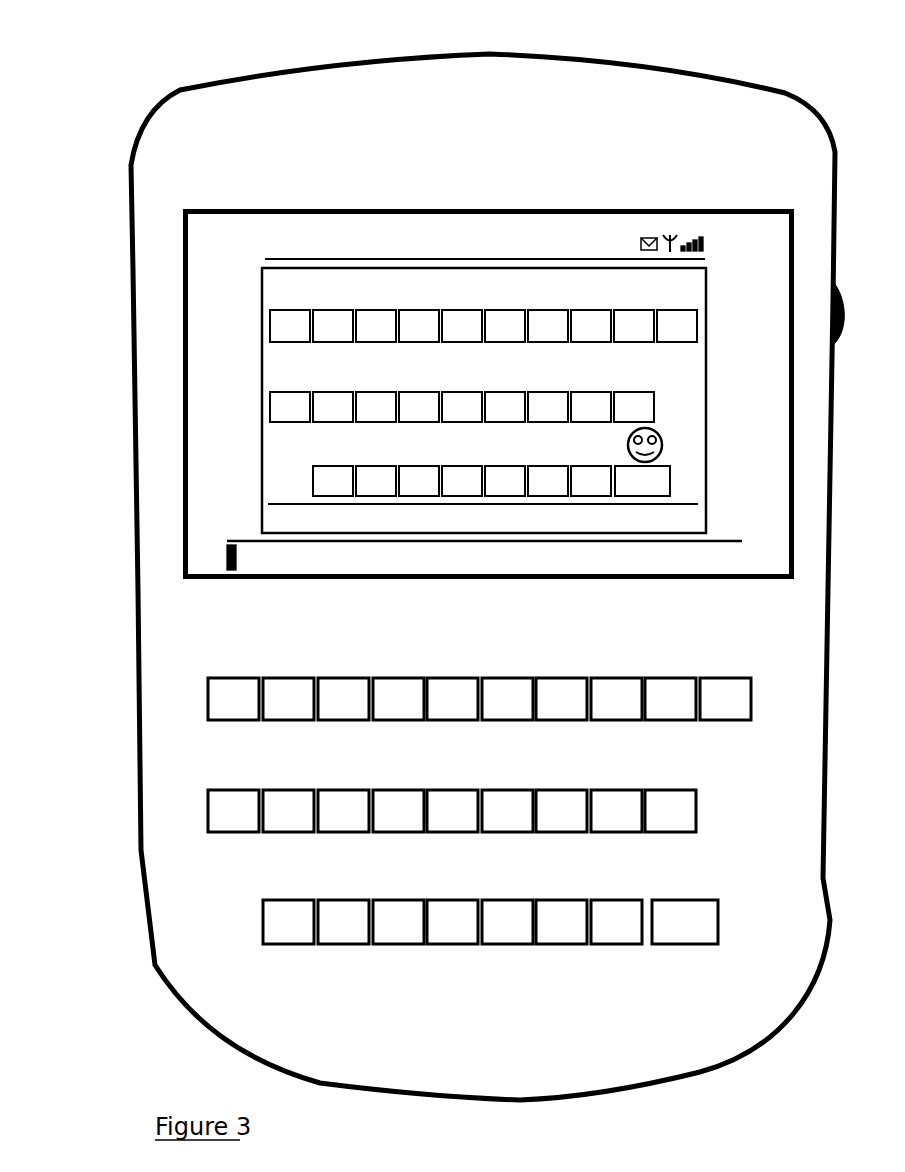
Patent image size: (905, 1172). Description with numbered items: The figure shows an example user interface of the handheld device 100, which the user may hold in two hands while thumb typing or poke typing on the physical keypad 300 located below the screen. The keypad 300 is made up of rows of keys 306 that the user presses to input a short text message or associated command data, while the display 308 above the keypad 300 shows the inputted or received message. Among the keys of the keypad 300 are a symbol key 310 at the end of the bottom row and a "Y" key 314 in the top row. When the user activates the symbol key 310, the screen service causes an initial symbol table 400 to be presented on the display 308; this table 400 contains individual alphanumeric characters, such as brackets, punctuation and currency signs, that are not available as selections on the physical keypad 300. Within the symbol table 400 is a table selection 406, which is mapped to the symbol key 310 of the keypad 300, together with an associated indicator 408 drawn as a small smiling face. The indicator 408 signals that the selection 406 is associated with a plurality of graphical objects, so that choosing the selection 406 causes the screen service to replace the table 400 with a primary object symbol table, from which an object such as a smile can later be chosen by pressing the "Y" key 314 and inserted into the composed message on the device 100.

The device 100 is at (690, 54).
The keypad 300 is at (392, 833).
The key 306 is at (218, 807).
The display 308 is at (178, 492).
The symbol key 310 is at (672, 946).
The "Y" key 314 is at (526, 686).
The initial symbol table 400 is at (404, 400).
The table selection 406 is at (669, 484).
The indicator 408 is at (663, 438).